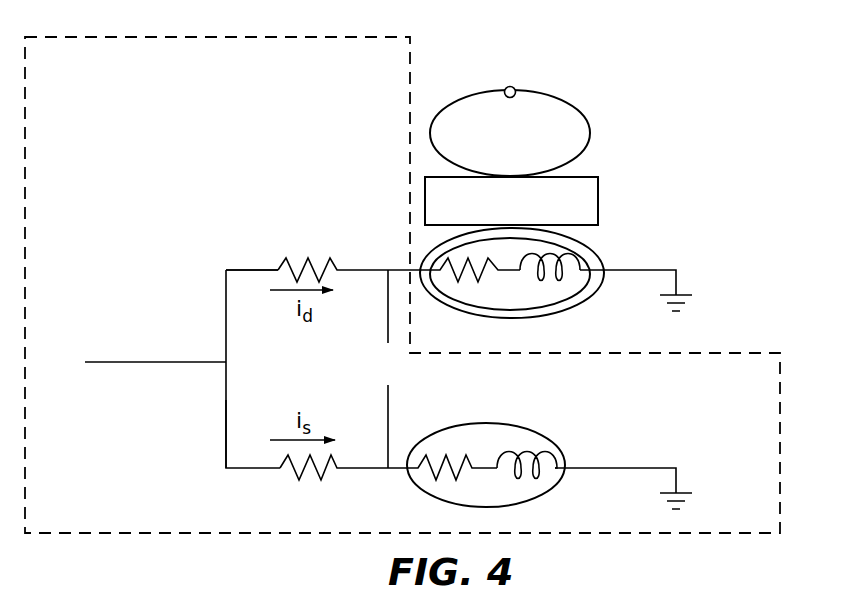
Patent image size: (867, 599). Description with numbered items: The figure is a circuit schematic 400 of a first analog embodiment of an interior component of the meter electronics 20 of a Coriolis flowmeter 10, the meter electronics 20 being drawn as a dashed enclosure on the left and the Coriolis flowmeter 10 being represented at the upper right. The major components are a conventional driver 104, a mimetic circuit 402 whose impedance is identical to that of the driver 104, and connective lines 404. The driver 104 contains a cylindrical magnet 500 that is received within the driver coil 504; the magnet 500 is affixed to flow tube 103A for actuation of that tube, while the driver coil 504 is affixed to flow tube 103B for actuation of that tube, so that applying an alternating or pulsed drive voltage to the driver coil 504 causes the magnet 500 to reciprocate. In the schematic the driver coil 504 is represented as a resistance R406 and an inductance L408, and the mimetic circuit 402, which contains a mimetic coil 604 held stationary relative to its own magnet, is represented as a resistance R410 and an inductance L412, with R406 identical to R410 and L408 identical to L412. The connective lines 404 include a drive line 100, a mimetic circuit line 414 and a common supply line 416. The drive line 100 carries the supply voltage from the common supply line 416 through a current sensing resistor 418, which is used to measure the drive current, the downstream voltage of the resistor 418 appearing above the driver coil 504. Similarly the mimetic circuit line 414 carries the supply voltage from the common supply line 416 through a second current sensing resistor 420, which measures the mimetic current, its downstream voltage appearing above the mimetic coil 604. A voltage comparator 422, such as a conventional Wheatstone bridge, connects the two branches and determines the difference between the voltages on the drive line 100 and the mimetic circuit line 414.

The meter electronics 20 is at (325, 37).
The cylindrical magnet 500 is at (514, 87).
The driver 104 is at (558, 117).
The flow tube 103A is at (590, 130).
The Coriolis flowmeter 10 is at (592, 198).
The circuit schematic 400 is at (749, 136).
The flow tube 103B is at (601, 258).
The driver coil 504 is at (580, 285).
The resistance R406 is at (464, 283).
The inductance L408 is at (546, 283).
The drive line 100 is at (240, 268).
The connective lines 404 is at (217, 280).
The current sensing resistor 418 is at (315, 226).
The common supply line 416 is at (123, 361).
The mimetic circuit line 414 is at (226, 430).
The current sensing resistor 420 is at (278, 495).
The voltage comparator 422 is at (388, 402).
The mimetic circuit 402 is at (540, 438).
The mimetic coil 604 is at (492, 423).
The resistance R410 is at (432, 458).
The inductance L412 is at (528, 458).